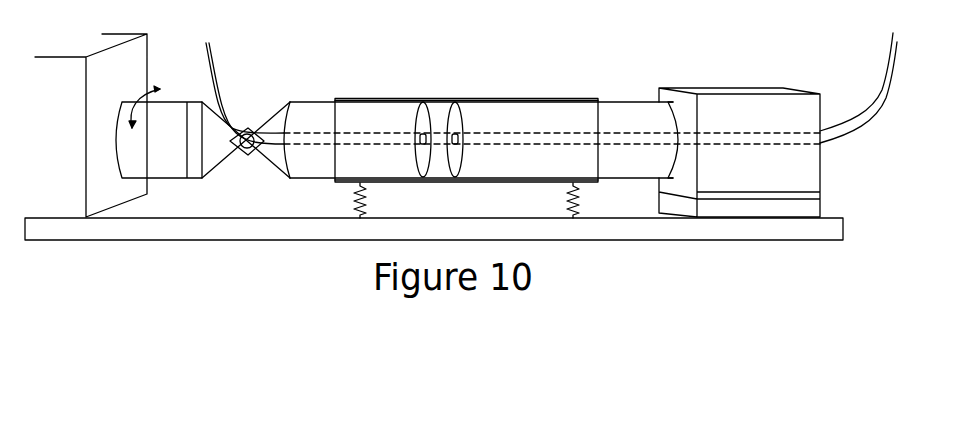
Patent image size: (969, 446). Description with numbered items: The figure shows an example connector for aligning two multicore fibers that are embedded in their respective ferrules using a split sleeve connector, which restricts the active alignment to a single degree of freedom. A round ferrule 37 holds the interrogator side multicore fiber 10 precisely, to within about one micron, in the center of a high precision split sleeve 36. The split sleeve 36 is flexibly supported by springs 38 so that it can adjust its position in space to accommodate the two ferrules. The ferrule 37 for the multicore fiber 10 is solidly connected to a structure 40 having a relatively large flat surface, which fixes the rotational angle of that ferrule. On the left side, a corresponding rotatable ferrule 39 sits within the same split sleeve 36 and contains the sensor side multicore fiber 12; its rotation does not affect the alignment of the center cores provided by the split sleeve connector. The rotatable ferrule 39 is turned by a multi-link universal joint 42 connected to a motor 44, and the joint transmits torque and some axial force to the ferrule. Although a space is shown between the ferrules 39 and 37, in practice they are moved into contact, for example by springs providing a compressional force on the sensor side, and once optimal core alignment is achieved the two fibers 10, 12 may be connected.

The interrogator side multicore fiber 10 is at (838, 137).
The sensor side multicore fiber 12 is at (216, 92).
The split sleeve 36 is at (462, 102).
The round ferrule 37 is at (618, 102).
The springs 38 is at (357, 200).
The rotatable ferrule 39 is at (308, 102).
The structure 40 is at (725, 88).
The multi-link universal joint 42 is at (252, 158).
The motor 44 is at (113, 35).